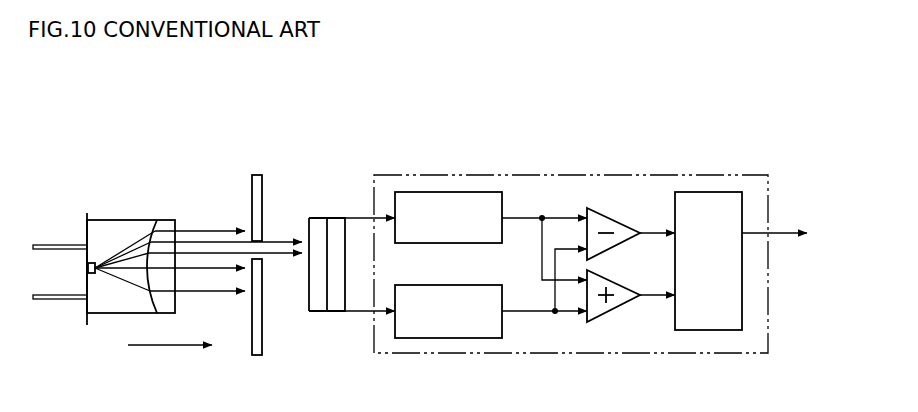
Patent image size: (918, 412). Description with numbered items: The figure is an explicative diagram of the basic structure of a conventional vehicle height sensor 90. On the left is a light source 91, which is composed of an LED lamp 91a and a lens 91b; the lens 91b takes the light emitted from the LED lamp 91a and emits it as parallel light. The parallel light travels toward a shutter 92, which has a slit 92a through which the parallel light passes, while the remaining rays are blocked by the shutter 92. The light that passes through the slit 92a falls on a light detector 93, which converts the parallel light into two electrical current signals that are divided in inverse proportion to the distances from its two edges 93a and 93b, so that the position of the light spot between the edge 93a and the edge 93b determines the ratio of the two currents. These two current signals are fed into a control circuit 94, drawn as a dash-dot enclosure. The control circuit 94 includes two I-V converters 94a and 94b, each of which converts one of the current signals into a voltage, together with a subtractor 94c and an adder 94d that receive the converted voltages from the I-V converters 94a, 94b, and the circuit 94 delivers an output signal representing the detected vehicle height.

The vehicle height sensor 90 is at (419, 129).
The light source 91 is at (118, 203).
The LED lamp 91a is at (90, 262).
The lens 91b is at (165, 222).
The shutter 92 is at (260, 175).
The slit 92a is at (262, 247).
The light detector 93 is at (324, 244).
The edge 93a is at (327, 218).
The edge 93b is at (316, 312).
The control circuit 94 is at (697, 174).
The I-V converter 94a is at (455, 197).
The I-V converter 94b is at (419, 338).
The subtractor 94c is at (604, 212).
The adder 94d is at (598, 306).